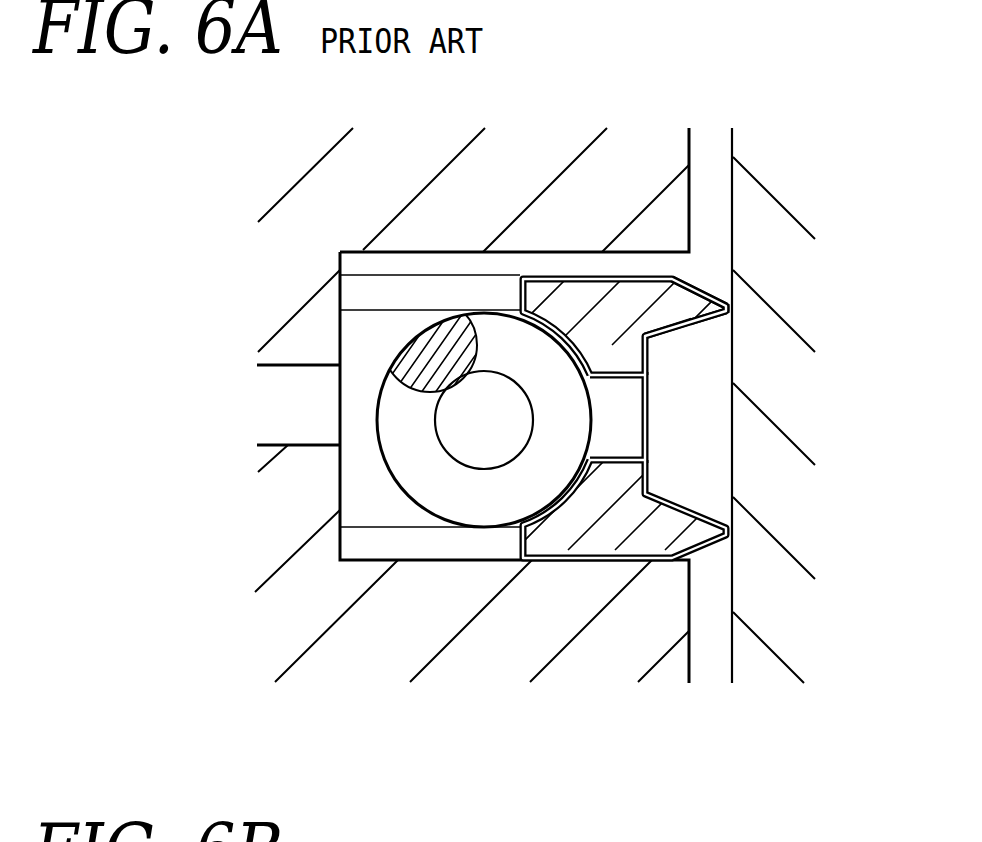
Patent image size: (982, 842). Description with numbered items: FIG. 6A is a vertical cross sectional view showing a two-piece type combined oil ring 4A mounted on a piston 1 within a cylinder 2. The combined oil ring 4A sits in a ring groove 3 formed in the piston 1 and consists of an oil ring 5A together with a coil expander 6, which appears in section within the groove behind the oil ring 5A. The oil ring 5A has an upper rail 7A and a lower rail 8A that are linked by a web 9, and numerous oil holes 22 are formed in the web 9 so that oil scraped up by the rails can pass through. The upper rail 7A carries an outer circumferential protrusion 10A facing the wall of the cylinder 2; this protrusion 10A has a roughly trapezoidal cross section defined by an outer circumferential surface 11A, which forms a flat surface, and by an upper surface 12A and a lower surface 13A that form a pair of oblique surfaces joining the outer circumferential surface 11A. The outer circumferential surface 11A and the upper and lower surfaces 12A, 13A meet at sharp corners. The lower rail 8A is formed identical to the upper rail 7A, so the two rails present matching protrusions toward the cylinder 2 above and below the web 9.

The piston 1 is at (388, 190).
The cylinder 2 is at (791, 174).
The ring groove 3 is at (434, 267).
The combined oil ring 4A is at (668, 382).
The oil ring 5A is at (639, 265).
The coil expander 6 is at (457, 493).
The upper rail 7A is at (597, 300).
The lower rail 8A is at (608, 538).
The web 9 is at (647, 412).
The outer circumferential protrusion 10A is at (695, 301).
The outer circumferential surface 11A is at (688, 311).
The upper surface 12A is at (685, 307).
The lower surface 13A is at (678, 320).
The oil holes 22 is at (618, 428).